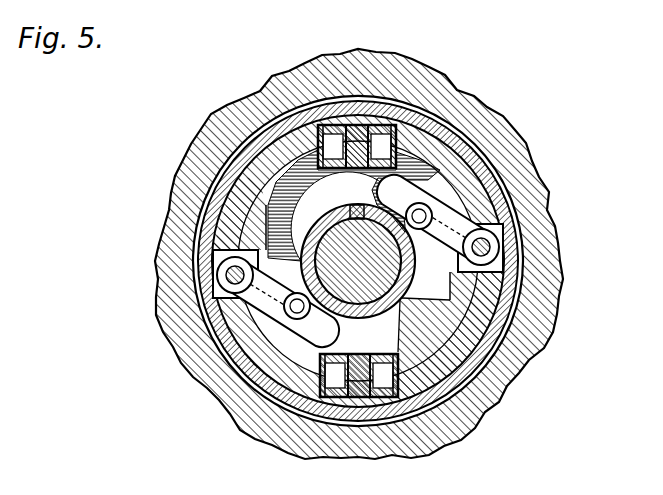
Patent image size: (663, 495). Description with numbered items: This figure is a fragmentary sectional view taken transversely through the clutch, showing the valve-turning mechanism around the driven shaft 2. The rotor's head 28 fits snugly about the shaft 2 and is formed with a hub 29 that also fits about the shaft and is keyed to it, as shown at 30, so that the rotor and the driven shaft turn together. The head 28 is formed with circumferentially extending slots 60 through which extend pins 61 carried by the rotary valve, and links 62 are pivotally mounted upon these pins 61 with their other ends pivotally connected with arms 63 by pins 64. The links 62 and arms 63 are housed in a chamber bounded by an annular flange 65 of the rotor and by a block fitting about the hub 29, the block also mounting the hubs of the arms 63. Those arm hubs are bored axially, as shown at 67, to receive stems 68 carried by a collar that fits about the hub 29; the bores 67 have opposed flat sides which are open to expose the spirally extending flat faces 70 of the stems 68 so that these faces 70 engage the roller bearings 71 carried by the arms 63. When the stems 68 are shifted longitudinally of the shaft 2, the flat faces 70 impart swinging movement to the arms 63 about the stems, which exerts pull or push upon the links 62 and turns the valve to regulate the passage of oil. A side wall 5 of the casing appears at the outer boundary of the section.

The shaft 2 is at (384, 291).
The side wall 5 is at (484, 120).
The head 28 is at (456, 166).
The hub 29 is at (401, 277).
The key 30 is at (358, 261).
The slots 60 is at (311, 334).
The pins 61 is at (294, 314).
The links 62 is at (264, 302).
The arms 63 is at (260, 173).
The pins 64 is at (222, 279).
The annular flange 65 is at (501, 192).
The bores 67 is at (370, 125).
The stems 68 is at (350, 124).
The spirally extending flat faces 70 is at (356, 206).
The roller bearings 71 is at (278, 73).